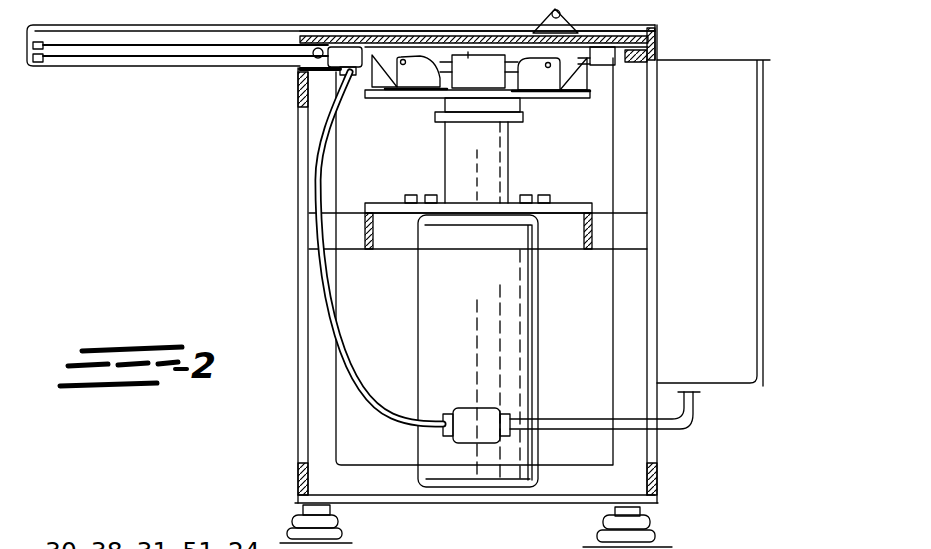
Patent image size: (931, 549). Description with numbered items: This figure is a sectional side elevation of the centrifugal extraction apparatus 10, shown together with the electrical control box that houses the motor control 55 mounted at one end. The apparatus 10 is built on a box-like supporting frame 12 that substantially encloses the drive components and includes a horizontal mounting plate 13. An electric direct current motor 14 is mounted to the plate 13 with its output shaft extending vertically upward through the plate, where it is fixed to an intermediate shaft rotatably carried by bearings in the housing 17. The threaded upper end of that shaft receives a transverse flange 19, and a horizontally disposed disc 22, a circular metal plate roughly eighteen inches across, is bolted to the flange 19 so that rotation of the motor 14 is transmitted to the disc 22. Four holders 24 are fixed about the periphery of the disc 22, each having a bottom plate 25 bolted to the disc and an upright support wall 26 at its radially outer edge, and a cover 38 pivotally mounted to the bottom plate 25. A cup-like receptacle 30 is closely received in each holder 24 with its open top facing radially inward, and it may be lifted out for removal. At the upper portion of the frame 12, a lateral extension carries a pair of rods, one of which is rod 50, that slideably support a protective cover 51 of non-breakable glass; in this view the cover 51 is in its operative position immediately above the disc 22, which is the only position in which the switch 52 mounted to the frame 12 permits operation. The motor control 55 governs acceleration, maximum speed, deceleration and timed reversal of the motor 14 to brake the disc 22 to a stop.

The apparatus 10 is at (205, 222).
The supporting frame 12 is at (283, 290).
The horizontal mounting plate 13 is at (395, 197).
The electric direct current motor 14 is at (490, 283).
The housing 17 is at (456, 152).
The transverse flange 19 is at (514, 102).
The disc 22 is at (402, 110).
The holder 24 is at (520, 27).
The bottom plate 25 is at (416, 97).
The upright support wall 26 is at (502, 85).
The receptacle 30 is at (585, 79).
The cover 38 is at (567, 33).
The rod 50 is at (196, 64).
The protective cover 51 is at (413, 23).
The switch 52 is at (347, 26).
The motor control 55 is at (740, 400).